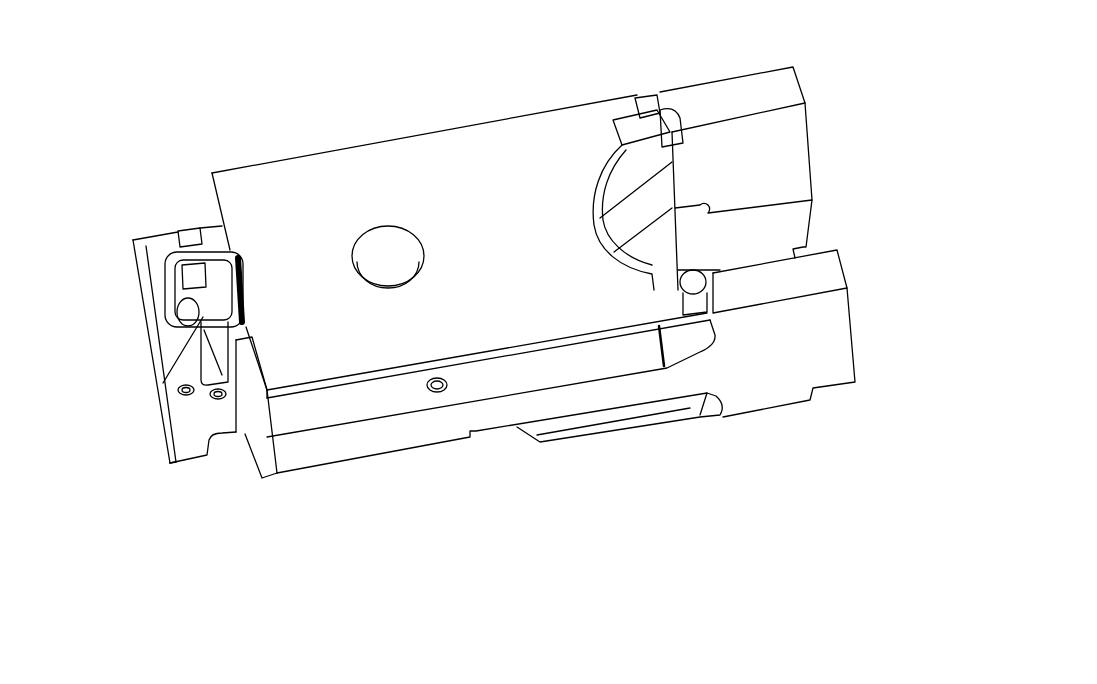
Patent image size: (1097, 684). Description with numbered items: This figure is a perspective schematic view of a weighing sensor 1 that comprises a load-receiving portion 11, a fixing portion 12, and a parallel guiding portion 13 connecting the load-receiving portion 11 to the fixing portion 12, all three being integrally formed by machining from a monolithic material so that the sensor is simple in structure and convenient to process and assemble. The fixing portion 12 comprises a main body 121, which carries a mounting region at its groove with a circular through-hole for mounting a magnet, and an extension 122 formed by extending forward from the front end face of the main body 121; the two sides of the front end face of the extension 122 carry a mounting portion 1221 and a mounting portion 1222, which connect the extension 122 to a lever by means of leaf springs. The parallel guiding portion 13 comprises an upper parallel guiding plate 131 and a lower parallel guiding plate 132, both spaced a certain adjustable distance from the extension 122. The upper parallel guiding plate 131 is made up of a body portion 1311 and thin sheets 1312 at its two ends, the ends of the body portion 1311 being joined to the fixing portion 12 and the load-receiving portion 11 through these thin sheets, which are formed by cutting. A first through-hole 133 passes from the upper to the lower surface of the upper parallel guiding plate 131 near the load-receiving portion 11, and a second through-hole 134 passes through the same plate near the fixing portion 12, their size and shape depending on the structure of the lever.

The weighing sensor 1 is at (442, 98).
The load-receiving portion 11 is at (163, 312).
The fixing portion 12 is at (855, 343).
The main body 121 is at (743, 358).
The extension 122 is at (360, 435).
The mounting portion 1221 is at (210, 247).
The mounting portion 1222 is at (263, 450).
The parallel guiding portion 13 is at (327, 200).
The upper parallel guiding plate 131 is at (392, 160).
The body portion 1311 is at (503, 148).
The thin sheets 1312 is at (180, 237).
The lower parallel guiding plate 132 is at (617, 432).
The first through-hole 133 is at (162, 397).
The second through-hole 134 is at (610, 180).